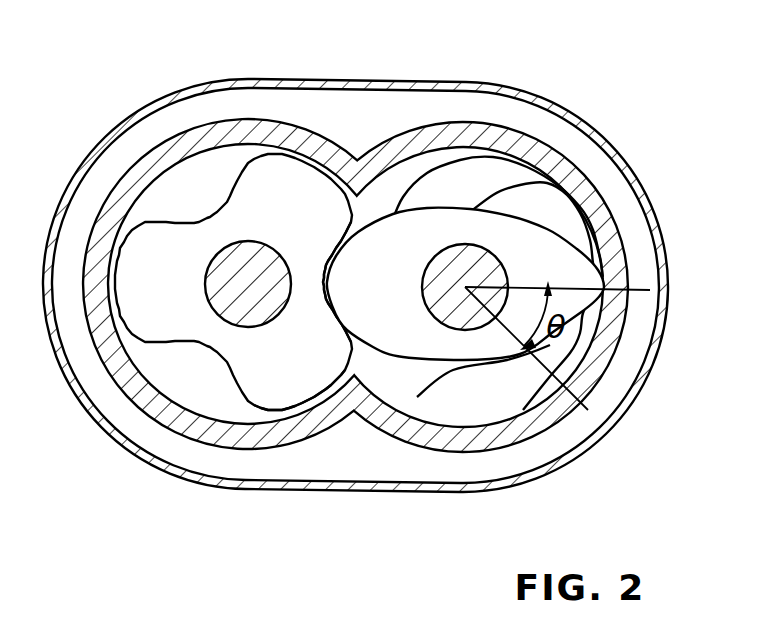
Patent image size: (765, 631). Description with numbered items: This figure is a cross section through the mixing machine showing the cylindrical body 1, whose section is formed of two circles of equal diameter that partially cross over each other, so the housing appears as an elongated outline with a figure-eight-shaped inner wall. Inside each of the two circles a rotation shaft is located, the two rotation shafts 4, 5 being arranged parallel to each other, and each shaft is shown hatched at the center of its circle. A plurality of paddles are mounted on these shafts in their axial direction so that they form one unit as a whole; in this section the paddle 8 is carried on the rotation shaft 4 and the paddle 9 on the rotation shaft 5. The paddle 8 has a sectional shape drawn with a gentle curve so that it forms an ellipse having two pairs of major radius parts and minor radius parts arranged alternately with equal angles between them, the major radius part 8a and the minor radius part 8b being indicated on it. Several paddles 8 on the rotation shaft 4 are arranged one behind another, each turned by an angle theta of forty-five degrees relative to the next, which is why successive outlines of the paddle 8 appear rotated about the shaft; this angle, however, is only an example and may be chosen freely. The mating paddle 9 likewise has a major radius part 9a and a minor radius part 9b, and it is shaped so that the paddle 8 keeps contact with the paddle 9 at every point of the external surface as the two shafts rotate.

The cylindrical body 1 is at (355, 246).
The rotation shaft 4 is at (551, 230).
The rotation shaft 5 is at (299, 166).
The paddle 8 is at (673, 189).
The major radius part 8a is at (597, 283).
The minor radius part 8b is at (559, 163).
The paddle 9 is at (57, 453).
The major radius part 9a is at (276, 481).
The minor radius part 9b is at (327, 399).